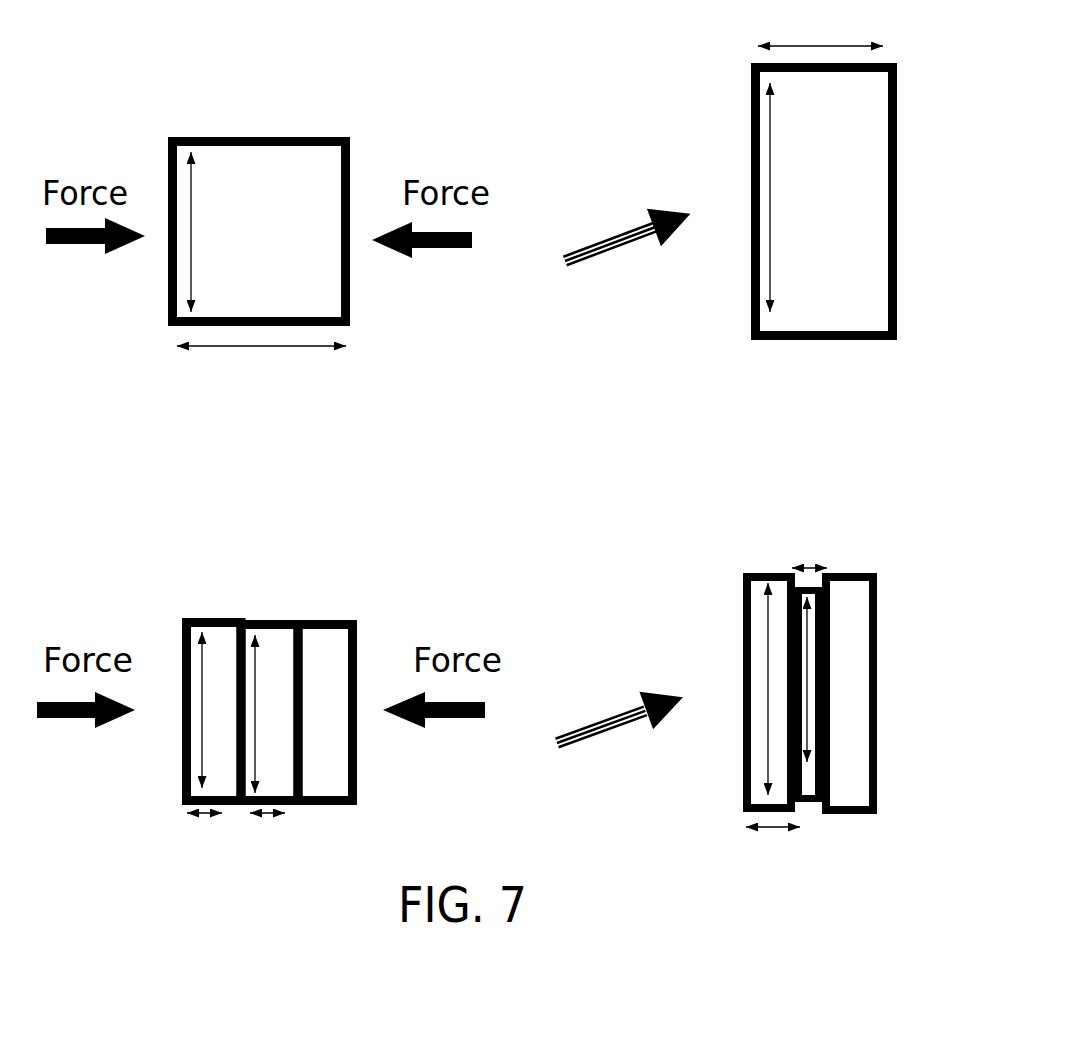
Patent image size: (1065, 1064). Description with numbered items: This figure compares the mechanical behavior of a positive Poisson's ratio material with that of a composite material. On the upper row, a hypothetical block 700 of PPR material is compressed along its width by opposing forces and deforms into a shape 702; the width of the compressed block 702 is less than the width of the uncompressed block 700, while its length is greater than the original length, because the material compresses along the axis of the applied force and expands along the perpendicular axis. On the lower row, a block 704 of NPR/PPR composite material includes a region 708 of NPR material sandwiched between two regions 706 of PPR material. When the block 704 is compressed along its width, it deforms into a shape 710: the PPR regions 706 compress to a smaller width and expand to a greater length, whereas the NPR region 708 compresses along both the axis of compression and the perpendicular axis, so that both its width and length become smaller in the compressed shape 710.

The block of PPR material 700 is at (275, 252).
The compressed block shape 702 is at (842, 208).
The block of NPR/PPR composite material 704 is at (100, 821).
The region of PPR material 706 is at (183, 643).
The region of NPR material 708 is at (268, 619).
The compressed composite shape 710 is at (860, 873).